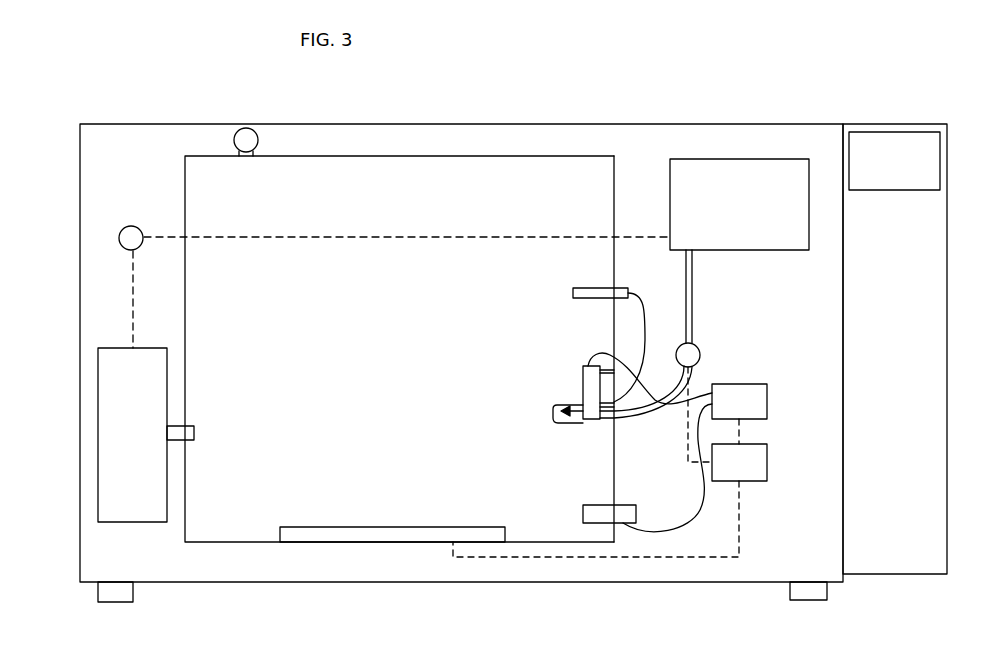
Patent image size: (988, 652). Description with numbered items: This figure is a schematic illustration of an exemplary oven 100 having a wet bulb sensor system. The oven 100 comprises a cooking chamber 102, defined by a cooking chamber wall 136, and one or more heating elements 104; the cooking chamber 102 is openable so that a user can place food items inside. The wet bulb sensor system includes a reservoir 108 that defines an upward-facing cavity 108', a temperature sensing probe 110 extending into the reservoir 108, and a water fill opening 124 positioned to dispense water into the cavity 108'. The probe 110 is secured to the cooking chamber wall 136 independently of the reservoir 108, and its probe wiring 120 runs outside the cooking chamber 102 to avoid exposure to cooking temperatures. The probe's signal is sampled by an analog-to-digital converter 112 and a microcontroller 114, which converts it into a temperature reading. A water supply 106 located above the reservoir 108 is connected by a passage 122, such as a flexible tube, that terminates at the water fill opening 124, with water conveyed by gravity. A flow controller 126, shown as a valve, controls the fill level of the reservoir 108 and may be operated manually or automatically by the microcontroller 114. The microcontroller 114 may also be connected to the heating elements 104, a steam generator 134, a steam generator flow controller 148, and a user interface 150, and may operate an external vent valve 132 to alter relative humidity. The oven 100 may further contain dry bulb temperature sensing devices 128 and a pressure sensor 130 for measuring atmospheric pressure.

The oven 100 is at (647, 79).
The cooking chamber 102 is at (470, 195).
The heating element 104 is at (396, 535).
The water supply 106 is at (772, 173).
The reservoir 108 is at (518, 424).
The upward-facing cavity 108' is at (509, 386).
The temperature sensing probe 110 is at (588, 390).
The analog-to-digital converter 112 is at (767, 402).
The microcontroller 114 is at (767, 468).
The probe wiring 120 is at (676, 400).
The passage 122 is at (692, 295).
The water fill opening 124 is at (615, 415).
The flow controller 126 is at (700, 357).
The dry bulb temperature sensing device 128 is at (573, 291).
The pressure sensor 130 is at (598, 510).
The external vent valve 132 is at (243, 130).
The steam generator 134 is at (148, 381).
The cooking chamber wall 136 is at (614, 192).
The steam generator flow controller 148 is at (124, 230).
The user interface 150 is at (917, 160).